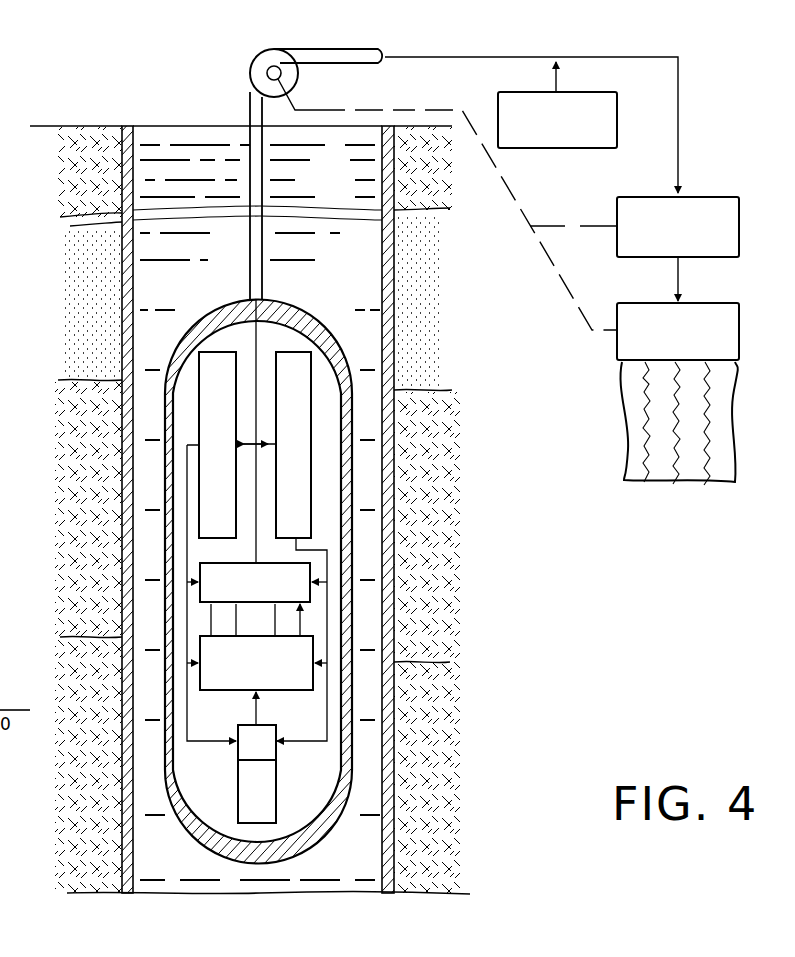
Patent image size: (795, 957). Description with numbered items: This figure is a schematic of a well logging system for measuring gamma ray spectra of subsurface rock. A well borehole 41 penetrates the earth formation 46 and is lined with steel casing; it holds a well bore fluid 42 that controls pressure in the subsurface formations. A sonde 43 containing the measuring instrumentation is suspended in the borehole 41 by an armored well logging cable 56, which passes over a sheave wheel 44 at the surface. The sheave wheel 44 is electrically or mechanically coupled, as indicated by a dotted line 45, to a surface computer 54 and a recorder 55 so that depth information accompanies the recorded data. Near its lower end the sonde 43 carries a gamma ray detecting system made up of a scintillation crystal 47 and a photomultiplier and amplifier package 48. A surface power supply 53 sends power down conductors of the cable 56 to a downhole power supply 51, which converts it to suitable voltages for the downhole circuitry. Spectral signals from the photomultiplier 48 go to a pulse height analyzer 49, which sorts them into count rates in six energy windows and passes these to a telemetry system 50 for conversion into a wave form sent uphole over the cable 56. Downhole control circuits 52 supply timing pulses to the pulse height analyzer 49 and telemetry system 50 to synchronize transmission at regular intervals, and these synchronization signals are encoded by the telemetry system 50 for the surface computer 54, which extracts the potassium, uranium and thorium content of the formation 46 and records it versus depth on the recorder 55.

The well borehole 41 is at (152, 120).
The well bore fluid 42 is at (331, 194).
The sonde 43 is at (347, 357).
The sheave wheel 44 is at (256, 72).
The dotted line 45 is at (368, 100).
The earth formation 46 is at (92, 309).
The scintillation crystal 47 is at (276, 780).
The photomultiplier and amplifier package 48 is at (276, 733).
The pulse height analyzer 49 is at (313, 650).
The telemetry system 50 is at (310, 568).
The downhole power supply 51 is at (199, 418).
The downhole control circuits 52 is at (311, 424).
The surface power supply 53 is at (612, 92).
The surface computer 54 is at (706, 197).
The recorder 55 is at (722, 303).
The armored well logging cable 56 is at (250, 112).